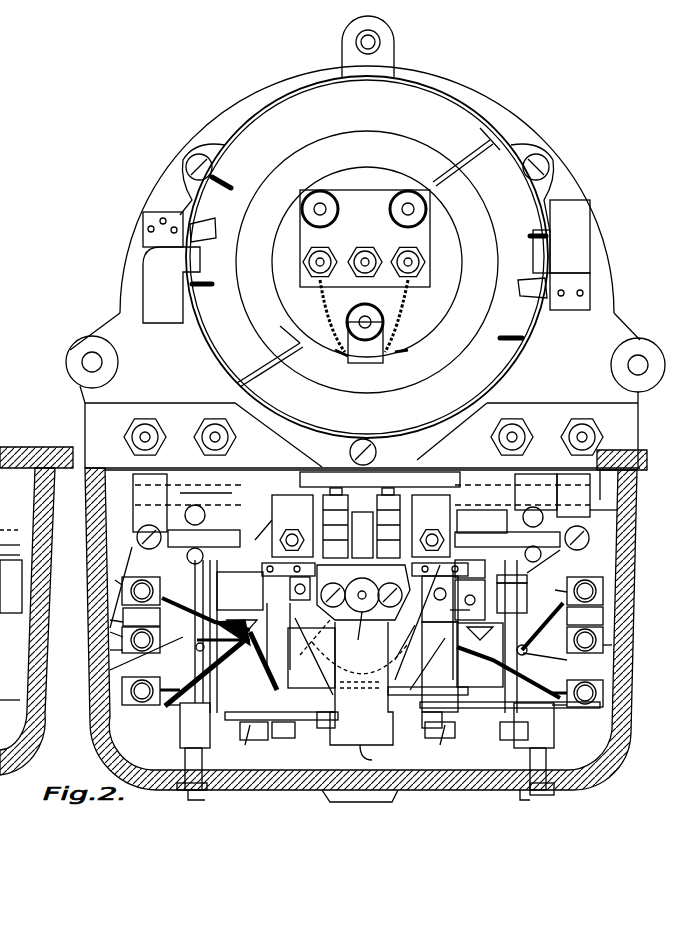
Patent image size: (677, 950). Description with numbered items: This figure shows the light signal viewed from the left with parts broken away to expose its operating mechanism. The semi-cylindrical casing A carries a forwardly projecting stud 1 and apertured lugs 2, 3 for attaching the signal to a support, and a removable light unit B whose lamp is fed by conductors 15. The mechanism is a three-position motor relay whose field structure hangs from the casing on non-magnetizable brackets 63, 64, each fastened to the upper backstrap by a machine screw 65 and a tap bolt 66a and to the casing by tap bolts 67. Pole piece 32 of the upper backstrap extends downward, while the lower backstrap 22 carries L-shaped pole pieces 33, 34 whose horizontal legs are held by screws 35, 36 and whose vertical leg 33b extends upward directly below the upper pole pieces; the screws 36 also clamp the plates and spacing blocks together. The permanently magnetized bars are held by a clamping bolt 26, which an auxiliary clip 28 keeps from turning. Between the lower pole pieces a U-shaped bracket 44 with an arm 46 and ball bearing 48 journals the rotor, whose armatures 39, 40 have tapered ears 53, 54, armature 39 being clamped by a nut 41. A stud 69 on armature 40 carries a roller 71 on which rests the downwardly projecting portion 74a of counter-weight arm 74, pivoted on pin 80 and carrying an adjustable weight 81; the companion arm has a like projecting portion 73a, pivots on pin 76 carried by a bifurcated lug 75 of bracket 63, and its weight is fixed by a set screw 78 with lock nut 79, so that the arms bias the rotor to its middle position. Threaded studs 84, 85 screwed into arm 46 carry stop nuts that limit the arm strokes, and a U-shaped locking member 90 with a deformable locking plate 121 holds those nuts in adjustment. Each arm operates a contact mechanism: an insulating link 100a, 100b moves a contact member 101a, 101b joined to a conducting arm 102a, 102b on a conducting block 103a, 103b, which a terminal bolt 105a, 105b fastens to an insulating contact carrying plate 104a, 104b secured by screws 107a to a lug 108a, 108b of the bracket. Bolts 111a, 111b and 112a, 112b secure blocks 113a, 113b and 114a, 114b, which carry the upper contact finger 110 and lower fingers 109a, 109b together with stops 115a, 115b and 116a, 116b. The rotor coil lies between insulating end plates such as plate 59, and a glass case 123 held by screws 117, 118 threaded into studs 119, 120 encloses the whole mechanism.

The stud 1 is at (356, 42).
The apertured lug 2 is at (641, 348).
The apertured lug 3 is at (78, 357).
The casing A is at (168, 157).
The light unit B is at (470, 127).
The conductors 15 is at (318, 300).
The backstrap 22 is at (380, 604).
The clamping bolt 26 is at (512, 594).
The auxiliary clip 28 is at (540, 602).
The pole piece 32 is at (551, 494).
The pole piece 33 is at (349, 745).
The vertically extending leg 33b is at (361, 683).
The pole piece 34 is at (428, 694).
The screw 35 is at (276, 468).
The screw 36 is at (490, 470).
The armature 39 is at (25, 690).
The armature 40 is at (280, 712).
The nut 41 is at (36, 611).
The bracket 44 is at (373, 755).
The arm 46 is at (315, 639).
The ball bearing 48 is at (353, 633).
The ear 53 is at (253, 535).
The ear 54 is at (246, 655).
The insulating end plate 59 is at (359, 659).
The bracket 63 is at (83, 503).
The bracket 64 is at (605, 489).
The machine screw 65 is at (11, 563).
The terminal 66a is at (15, 555).
The tap bolt 67 is at (11, 530).
The stud 69 is at (426, 627).
The roller 71 is at (470, 600).
The downwardly projecting portion 73a is at (310, 652).
The counter-weight arm 74 is at (459, 526).
The downwardly projecting portion 74a is at (405, 644).
The bifurcated lug 75 is at (135, 518).
The pivot pin 76 is at (138, 540).
The set screw 78 is at (292, 526).
The lock nut 79 is at (262, 566).
The pivot pin 80 is at (604, 521).
The weight 81 is at (387, 514).
The threaded stud 84 is at (340, 514).
The threaded stud 85 is at (385, 514).
The locking member 90 is at (363, 592).
The insulating link 100a is at (242, 604).
The insulating link 100b is at (478, 566).
The movable contact member 101a is at (270, 600).
The movable contact member 101b is at (480, 655).
The conducting arm 102a is at (186, 636).
The conducting arm 102b is at (636, 688).
The conducting block 103a is at (123, 642).
The conducting block 103b is at (605, 632).
The contact carrying plate 104a is at (123, 630).
The contact carrying plate 104b is at (596, 541).
The bolt 105a is at (123, 654).
The bolt 105b is at (603, 642).
The screws 107a is at (204, 609).
The lug 108a is at (215, 505).
The lug 108b is at (521, 496).
The flexible contact finger 109a is at (214, 673).
The flexible contact finger 109b is at (510, 677).
The flexible contact finger 110 is at (324, 607).
The bolt 111a is at (145, 581).
The bolt 111b is at (587, 581).
The bolt 112a is at (157, 709).
The bolt 112b is at (578, 723).
The conducting block 113a is at (128, 593).
The conducting block 113b is at (551, 590).
The conducting block 114a is at (153, 728).
The conducting block 114b is at (576, 720).
The stop 115a is at (145, 617).
The stop 115b is at (565, 633).
The stop 116a is at (146, 671).
The stop 116b is at (580, 684).
The screw 117 is at (205, 800).
The screw 118 is at (520, 800).
The stud 119 is at (178, 745).
The stud 120 is at (546, 749).
The locking plate 121 is at (362, 498).
The glass case 123 is at (614, 760).